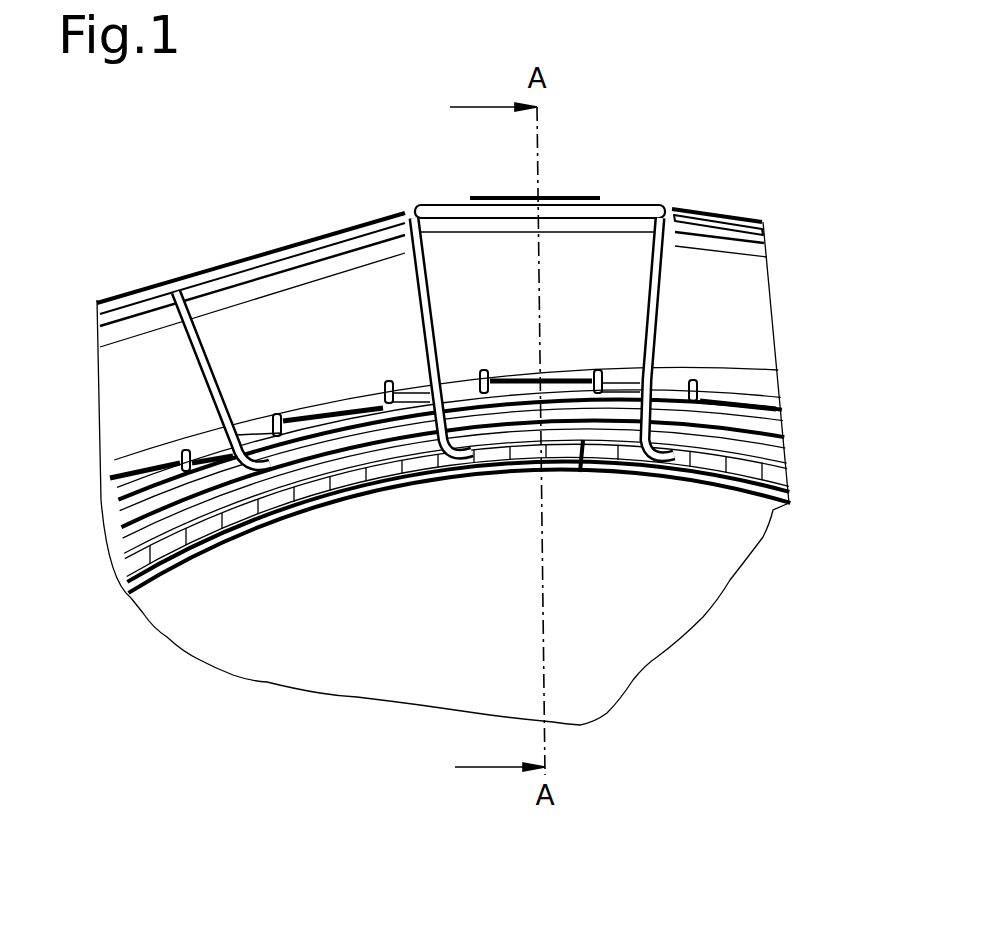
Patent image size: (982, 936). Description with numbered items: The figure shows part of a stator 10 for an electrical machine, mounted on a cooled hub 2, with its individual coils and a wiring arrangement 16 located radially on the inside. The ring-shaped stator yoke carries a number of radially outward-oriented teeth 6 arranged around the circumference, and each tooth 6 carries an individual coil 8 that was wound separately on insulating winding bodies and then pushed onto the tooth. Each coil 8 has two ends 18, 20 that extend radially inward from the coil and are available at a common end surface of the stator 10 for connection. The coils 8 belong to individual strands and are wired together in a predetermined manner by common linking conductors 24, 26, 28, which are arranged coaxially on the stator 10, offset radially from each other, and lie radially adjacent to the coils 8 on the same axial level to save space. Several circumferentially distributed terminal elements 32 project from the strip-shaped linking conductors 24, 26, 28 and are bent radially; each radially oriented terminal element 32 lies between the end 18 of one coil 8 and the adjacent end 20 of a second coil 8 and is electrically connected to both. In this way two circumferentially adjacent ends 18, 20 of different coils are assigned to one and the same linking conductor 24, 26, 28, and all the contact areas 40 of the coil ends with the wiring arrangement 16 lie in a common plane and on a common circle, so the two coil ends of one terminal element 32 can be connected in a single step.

The cooled hub 2 is at (772, 522).
The tooth 6 is at (258, 233).
The individual coil 8 is at (114, 280).
The stator 10 is at (717, 667).
The wiring arrangement 16 is at (802, 452).
The coil end 18 is at (213, 280).
The coil end 20 is at (183, 453).
The linking conductor 24 is at (104, 538).
The linking conductor 26 is at (110, 567).
The linking conductor 28 is at (119, 590).
The terminal element 32 is at (225, 460).
The contact area 40 is at (583, 437).